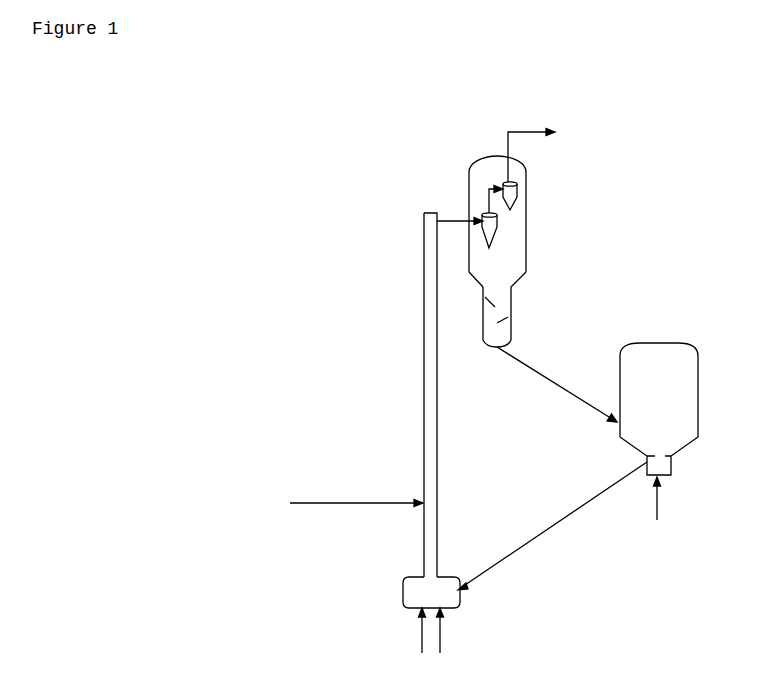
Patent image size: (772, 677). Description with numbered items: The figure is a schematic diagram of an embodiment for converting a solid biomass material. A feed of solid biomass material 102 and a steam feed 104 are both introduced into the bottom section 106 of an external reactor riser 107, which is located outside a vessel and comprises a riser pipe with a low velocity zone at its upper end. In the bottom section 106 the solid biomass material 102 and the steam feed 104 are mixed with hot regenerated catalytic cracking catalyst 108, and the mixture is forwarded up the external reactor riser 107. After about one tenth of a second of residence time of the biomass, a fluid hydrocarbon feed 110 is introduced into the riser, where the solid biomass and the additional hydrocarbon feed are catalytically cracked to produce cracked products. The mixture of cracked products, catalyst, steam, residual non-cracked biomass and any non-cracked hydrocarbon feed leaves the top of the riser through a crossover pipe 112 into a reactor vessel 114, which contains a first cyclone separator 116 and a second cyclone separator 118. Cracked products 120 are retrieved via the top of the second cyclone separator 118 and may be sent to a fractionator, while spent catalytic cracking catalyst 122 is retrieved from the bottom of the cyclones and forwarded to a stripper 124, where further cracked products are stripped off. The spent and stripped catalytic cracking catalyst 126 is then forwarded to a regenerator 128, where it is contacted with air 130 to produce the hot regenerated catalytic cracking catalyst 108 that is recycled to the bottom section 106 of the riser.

The feed of solid biomass material 102 is at (420, 627).
The steam feed 104 is at (439, 630).
The bottom section of the external reactor riser 106 is at (403, 588).
The external reactor riser 107 is at (437, 440).
The hot regenerated catalytic cracking catalyst 108 is at (577, 514).
The fluid hydrocarbon feed 110 is at (346, 504).
The crossover pipe 112 is at (453, 220).
The reactor vessel 114 is at (526, 229).
The first cyclone separator 116 is at (526, 271).
The second cyclone separator 118 is at (515, 191).
The cracked products 120 is at (526, 132).
The spent catalytic cracking catalyst 122 is at (488, 257).
The stripper 124 is at (511, 300).
The spent and stripped catalytic cracking catalyst 126 is at (565, 392).
The regenerator 128 is at (698, 397).
The air 130 is at (659, 497).